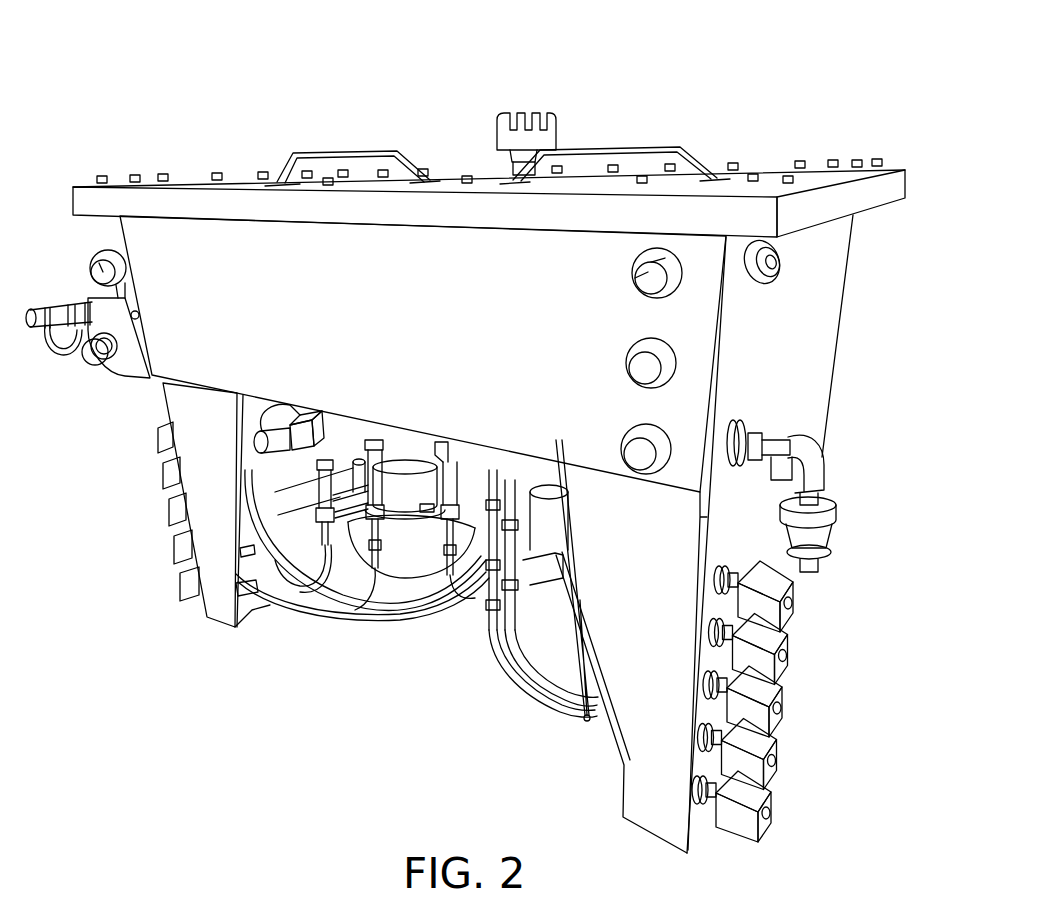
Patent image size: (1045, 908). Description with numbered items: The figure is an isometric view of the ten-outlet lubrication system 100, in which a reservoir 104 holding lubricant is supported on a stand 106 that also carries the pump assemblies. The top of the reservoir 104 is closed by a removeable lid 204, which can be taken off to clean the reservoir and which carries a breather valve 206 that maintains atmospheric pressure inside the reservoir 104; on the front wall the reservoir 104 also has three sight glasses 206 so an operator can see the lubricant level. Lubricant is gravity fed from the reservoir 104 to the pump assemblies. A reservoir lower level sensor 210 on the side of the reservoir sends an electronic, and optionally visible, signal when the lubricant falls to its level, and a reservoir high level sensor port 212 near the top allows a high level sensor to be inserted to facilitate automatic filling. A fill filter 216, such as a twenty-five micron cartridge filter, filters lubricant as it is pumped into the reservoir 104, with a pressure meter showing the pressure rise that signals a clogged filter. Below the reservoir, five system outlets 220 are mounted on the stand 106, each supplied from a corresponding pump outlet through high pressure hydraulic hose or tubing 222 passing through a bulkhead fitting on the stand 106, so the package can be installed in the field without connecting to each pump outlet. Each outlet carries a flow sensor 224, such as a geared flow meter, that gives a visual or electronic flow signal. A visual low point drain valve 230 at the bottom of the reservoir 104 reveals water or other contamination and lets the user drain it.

The ten-outlet lubrication system 100 is at (815, 42).
The reservoir 104 is at (838, 326).
The stand 106 is at (165, 400).
The removeable lid 204 is at (765, 173).
The breather valve / sight glasses 206 is at (553, 127).
The reservoir lower level sensor 210 is at (790, 440).
The reservoir high level sensor port 212 is at (775, 263).
The fill filter 216 is at (88, 299).
The system outlets 220 is at (717, 582).
The high pressure hydraulic hose or tubing 222 is at (617, 700).
The flow sensor 224 is at (800, 612).
The visual low point drain valve 230 is at (827, 477).